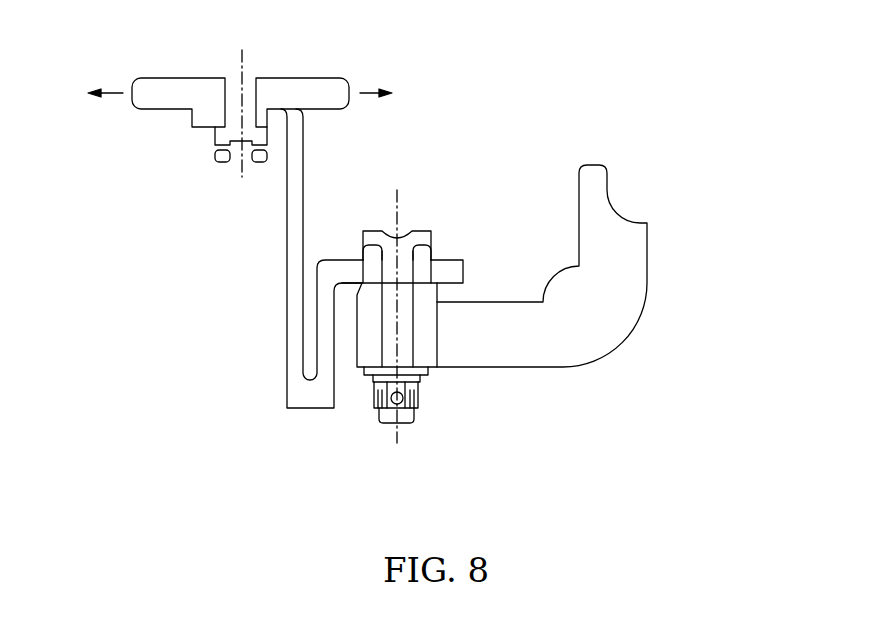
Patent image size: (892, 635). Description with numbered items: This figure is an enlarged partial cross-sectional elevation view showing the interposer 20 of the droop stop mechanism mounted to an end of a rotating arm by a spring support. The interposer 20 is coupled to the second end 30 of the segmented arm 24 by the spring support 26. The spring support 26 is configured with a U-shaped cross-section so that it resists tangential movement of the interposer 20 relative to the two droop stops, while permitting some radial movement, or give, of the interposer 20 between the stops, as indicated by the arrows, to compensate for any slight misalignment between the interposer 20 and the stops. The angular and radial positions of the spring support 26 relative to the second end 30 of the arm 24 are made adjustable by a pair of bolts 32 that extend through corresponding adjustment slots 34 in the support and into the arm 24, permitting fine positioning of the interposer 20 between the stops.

The interposer 20 is at (303, 85).
The segmented arm 24 is at (630, 250).
The spring support 26 is at (310, 388).
The second end 30 is at (423, 355).
The bolts 32 is at (405, 245).
The adjustment slots 34 is at (422, 276).